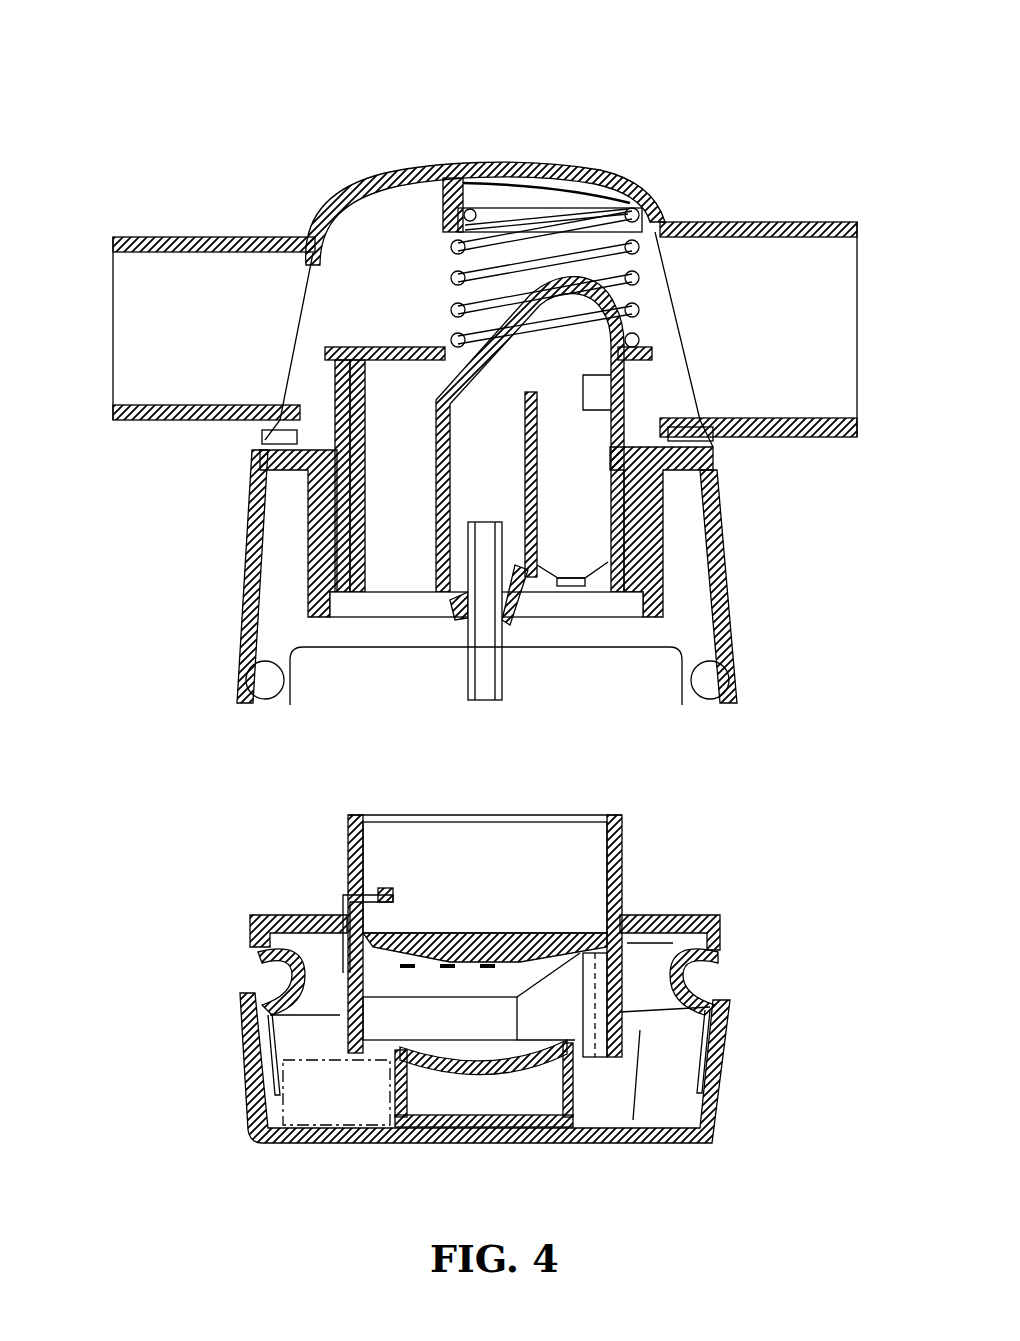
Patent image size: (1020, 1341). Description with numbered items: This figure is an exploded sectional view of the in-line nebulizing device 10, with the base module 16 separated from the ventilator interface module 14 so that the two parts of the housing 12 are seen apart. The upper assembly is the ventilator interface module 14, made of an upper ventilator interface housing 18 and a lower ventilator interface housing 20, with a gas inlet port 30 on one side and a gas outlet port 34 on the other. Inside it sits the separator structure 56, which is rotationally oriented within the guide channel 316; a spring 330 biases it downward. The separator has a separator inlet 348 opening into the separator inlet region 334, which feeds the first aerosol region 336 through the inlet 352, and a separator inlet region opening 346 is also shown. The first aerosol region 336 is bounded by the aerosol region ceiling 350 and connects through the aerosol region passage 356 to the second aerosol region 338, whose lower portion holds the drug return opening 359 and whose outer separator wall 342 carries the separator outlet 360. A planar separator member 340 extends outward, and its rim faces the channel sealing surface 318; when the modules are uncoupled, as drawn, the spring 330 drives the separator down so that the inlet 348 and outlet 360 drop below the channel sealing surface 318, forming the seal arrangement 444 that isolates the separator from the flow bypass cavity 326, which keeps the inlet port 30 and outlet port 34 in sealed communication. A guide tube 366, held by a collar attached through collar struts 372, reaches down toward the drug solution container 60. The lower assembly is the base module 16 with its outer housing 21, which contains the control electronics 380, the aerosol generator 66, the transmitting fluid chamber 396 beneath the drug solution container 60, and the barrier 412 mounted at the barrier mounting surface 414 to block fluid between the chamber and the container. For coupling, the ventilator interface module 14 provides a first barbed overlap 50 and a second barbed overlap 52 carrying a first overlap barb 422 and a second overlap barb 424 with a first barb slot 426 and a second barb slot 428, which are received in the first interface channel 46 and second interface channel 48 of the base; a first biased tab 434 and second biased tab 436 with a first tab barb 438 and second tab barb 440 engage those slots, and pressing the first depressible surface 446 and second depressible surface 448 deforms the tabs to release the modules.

The in-line nebulizing device 10 is at (676, 88).
The housing 12 is at (275, 85).
The ventilator interface module 14 is at (808, 488).
The base module 16 is at (726, 917).
The upper ventilator interface housing 18 is at (657, 208).
The lower ventilator interface housing 20 is at (170, 520).
The outer housing 21 is at (710, 1110).
The gas inlet port 30 is at (108, 300).
The gas outlet port 34 is at (870, 285).
The first interface channel 46 is at (650, 960).
The second interface channel 48 is at (320, 975).
The first barbed overlap 50 is at (748, 640).
The second barbed overlap 52 is at (230, 657).
The separator structure 56 is at (430, 335).
The drug solution container 60 is at (498, 872).
The aerosol generator 66 is at (493, 1073).
The guide channel 316 is at (367, 585).
The channel sealing surface 318 is at (580, 562).
The flow bypass cavity 326 is at (394, 271).
The spring 330 is at (578, 222).
The separator inlet region 334 is at (413, 472).
The first aerosol region 336 is at (503, 472).
The second aerosol region 338 is at (586, 452).
The planar separator member 340 is at (390, 347).
The outer separator wall 342 is at (357, 510).
The separator inlet region opening 346 is at (407, 578).
The separator inlet 348 is at (340, 385).
The aerosol region ceiling 350 is at (540, 285).
The inlet 352 is at (528, 592).
The aerosol region passage 356 is at (548, 362).
The drug return opening 359 is at (572, 582).
The separator outlet 360 is at (615, 405).
The guide tube 366 is at (470, 690).
The collar struts 372 is at (460, 622).
The control electronics 380 is at (327, 1028).
The transmitting fluid chamber 396 is at (471, 1031).
The barrier 412 is at (500, 950).
The barrier mounting surface 414 is at (430, 965).
The first overlap barb 422 is at (727, 683).
The second overlap barb 424 is at (250, 683).
The first barb slot 426 is at (692, 690).
The second barb slot 428 is at (290, 700).
The first biased tab 434 is at (728, 1000).
The second biased tab 436 is at (245, 998).
The first tab barb 438 is at (700, 970).
The second tab barb 440 is at (272, 967).
The seal arrangement 444 is at (312, 350).
The first depressible surface 446 is at (718, 1067).
The second depressible surface 448 is at (245, 1050).